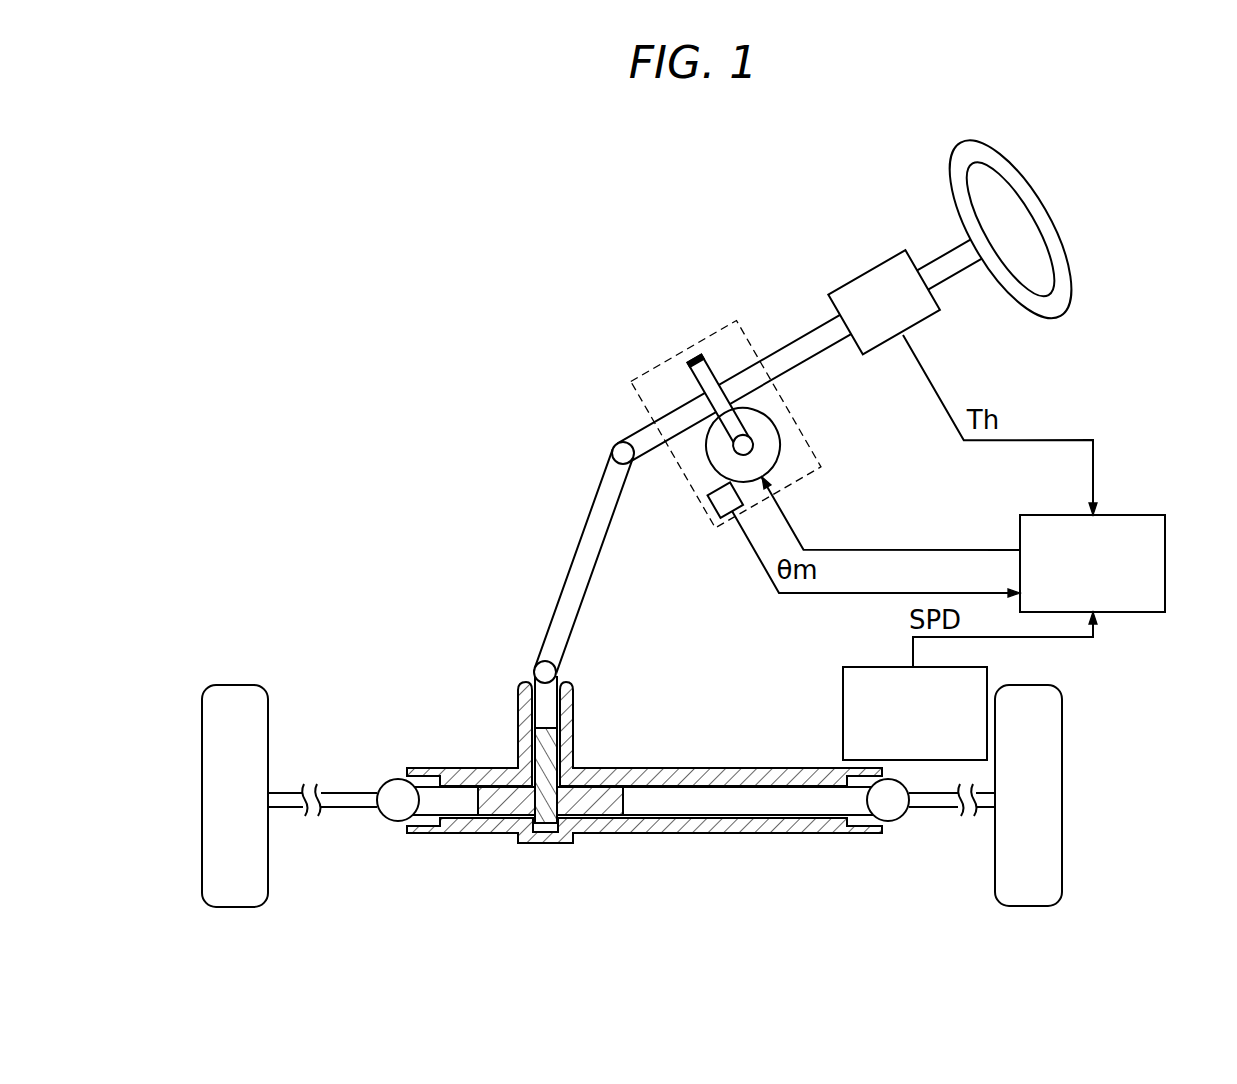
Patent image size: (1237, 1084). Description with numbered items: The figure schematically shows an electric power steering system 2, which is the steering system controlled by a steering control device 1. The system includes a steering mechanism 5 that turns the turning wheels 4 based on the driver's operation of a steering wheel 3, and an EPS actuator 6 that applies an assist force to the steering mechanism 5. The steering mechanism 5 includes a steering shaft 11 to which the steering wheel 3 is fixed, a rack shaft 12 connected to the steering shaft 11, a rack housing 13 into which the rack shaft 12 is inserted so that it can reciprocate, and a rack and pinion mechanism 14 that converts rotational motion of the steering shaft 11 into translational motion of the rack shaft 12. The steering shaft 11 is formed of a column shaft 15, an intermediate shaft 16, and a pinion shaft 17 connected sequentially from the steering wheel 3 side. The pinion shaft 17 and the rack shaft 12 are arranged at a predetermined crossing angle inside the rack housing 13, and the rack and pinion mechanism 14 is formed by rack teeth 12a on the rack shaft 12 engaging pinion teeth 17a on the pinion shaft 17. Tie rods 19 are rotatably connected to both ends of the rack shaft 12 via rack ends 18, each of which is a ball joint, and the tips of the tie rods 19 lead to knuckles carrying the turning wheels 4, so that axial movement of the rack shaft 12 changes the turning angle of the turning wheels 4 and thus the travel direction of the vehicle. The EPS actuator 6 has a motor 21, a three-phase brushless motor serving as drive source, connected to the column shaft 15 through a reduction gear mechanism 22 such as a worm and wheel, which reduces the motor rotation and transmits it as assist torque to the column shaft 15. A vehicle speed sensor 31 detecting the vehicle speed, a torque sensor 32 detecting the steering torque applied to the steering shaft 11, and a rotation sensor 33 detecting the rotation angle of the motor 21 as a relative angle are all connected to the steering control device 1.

The steering control device 1 is at (1167, 548).
The electric power steering system 2 is at (272, 268).
The steering wheel 3 is at (1044, 208).
The turning wheels 4 is at (231, 907).
The steering mechanism 5 is at (338, 663).
The EPS actuator 6 is at (650, 368).
The steering shaft 11 is at (548, 430).
The rack shaft 12 is at (735, 787).
The rack teeth 12a is at (497, 816).
The rack housing 13 is at (652, 768).
The rack and pinion mechanism 14 is at (577, 838).
The column shaft 15 is at (616, 440).
The intermediate shaft 16 is at (583, 568).
The pinion shaft 17 is at (537, 664).
The pinion teeth 17a is at (553, 830).
The rack ends 18 is at (386, 810).
The tie rods 19 is at (287, 810).
The motor 21 is at (781, 415).
The reduction gear mechanism 22 is at (716, 442).
The vehicle speed sensor 31 is at (862, 665).
The torque sensor 32 is at (862, 276).
The rotation sensor 33 is at (709, 510).